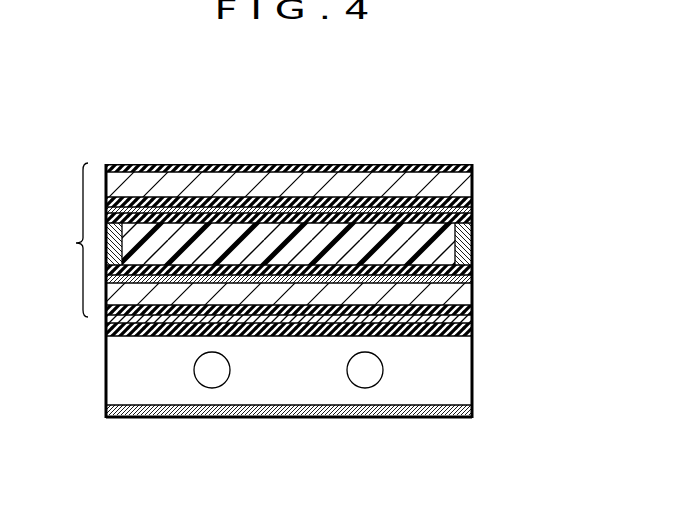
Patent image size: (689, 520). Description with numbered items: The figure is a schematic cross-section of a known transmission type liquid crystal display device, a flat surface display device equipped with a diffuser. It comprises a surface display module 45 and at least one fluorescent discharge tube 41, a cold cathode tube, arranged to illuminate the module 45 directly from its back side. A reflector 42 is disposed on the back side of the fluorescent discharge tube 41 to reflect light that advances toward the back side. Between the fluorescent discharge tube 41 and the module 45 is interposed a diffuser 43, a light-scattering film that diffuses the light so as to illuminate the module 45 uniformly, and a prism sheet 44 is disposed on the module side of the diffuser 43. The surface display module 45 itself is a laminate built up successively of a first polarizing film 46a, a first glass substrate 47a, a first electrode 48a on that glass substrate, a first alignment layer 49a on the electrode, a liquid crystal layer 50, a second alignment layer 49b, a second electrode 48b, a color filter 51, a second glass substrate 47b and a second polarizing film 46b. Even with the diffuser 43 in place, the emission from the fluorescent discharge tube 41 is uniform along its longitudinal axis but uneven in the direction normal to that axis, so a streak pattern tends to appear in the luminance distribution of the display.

The fluorescent discharge tube 41 is at (208, 388).
The reflector 42 is at (250, 405).
The diffuser 43 is at (277, 334).
The prism sheet 44 is at (425, 337).
The surface display module 45 is at (65, 240).
The first polarizing film 46a is at (458, 310).
The second polarizing film 46b is at (418, 168).
The first glass substrate 47a is at (455, 295).
The second glass substrate 47b is at (362, 185).
The first electrode 48a is at (462, 279).
The second electrode 48b is at (247, 202).
The first alignment layer 49a is at (458, 268).
The second alignment layer 49b is at (203, 216).
The liquid crystal layer 50 is at (440, 247).
The color filter 51 is at (292, 210).